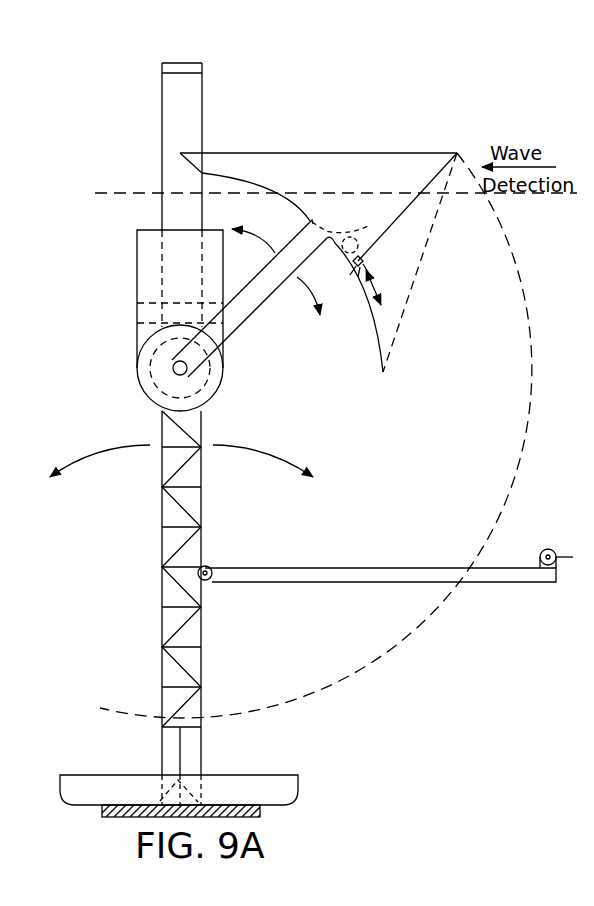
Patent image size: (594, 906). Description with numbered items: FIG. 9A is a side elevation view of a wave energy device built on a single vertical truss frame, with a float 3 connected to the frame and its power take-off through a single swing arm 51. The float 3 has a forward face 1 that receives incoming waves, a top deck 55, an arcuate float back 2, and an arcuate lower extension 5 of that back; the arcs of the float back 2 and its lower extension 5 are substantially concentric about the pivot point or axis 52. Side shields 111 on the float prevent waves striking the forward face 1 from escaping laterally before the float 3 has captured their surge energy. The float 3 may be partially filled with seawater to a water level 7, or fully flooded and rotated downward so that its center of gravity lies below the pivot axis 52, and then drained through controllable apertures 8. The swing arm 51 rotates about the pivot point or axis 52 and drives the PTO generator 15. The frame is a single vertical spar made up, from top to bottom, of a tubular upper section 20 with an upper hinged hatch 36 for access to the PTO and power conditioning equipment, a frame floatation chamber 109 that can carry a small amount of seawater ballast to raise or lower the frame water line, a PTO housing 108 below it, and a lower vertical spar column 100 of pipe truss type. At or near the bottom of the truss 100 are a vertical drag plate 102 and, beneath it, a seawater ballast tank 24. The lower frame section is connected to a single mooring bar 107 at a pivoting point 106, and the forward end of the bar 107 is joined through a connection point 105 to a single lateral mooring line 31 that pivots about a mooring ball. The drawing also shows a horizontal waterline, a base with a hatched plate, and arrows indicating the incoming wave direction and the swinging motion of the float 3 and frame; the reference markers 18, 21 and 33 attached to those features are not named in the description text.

The forward face 1 is at (391, 225).
The arcuate float back 2 is at (286, 206).
The float 3 is at (346, 183).
The arcuate lower extension 5 is at (380, 331).
The water level 7 is at (347, 227).
The controllable apertures 8 is at (364, 259).
The PTO generator 15 is at (208, 371).
The water surface line 18 is at (130, 193).
The tubular upper section 20 is at (203, 117).
The base plate 21 is at (262, 812).
The seawater ballast tank 24 is at (192, 787).
The lateral mooring line 31 is at (566, 557).
The base 33 is at (299, 783).
The upper hinged hatch 36 is at (190, 63).
The swing arm 51 is at (257, 297).
The pivot point or axis 52 is at (189, 378).
The top deck 55 is at (313, 152).
The lower vertical spar column 100 is at (160, 541).
The vertical drag plate 102 is at (181, 737).
The connection point 105 is at (540, 556).
The pivoting point 106 is at (208, 567).
The mooring bar 107 is at (318, 567).
The PTO housing 108 is at (145, 331).
The frame floatation chamber 109 is at (145, 266).
The side shields 111 is at (406, 273).